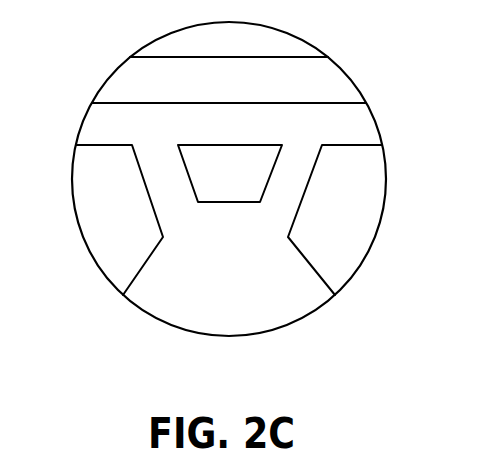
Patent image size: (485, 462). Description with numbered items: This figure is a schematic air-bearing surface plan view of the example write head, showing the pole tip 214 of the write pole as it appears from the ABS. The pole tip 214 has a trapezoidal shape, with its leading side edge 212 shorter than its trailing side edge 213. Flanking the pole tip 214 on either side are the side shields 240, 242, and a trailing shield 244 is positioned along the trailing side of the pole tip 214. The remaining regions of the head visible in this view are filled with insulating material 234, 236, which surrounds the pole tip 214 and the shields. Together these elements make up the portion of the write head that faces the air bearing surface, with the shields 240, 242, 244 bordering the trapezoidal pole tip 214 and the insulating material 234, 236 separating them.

The leading edge side 212 is at (213, 202).
The trailing edge side 213 is at (268, 144).
The pole tip 214 is at (230, 173).
The insulating material 234 is at (270, 293).
The insulating material 236 is at (120, 103).
The side shield 240 is at (119, 220).
The side shield 242 is at (335, 220).
The trailing shield 244 is at (229, 67).